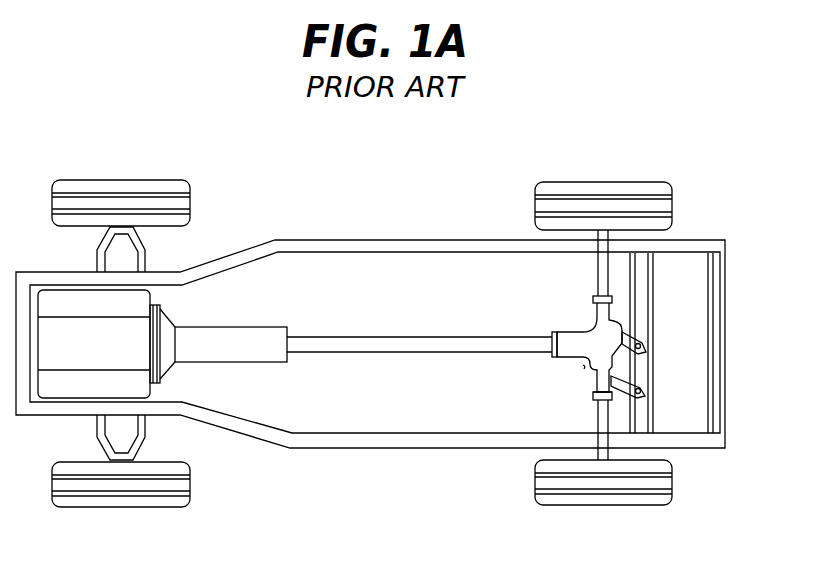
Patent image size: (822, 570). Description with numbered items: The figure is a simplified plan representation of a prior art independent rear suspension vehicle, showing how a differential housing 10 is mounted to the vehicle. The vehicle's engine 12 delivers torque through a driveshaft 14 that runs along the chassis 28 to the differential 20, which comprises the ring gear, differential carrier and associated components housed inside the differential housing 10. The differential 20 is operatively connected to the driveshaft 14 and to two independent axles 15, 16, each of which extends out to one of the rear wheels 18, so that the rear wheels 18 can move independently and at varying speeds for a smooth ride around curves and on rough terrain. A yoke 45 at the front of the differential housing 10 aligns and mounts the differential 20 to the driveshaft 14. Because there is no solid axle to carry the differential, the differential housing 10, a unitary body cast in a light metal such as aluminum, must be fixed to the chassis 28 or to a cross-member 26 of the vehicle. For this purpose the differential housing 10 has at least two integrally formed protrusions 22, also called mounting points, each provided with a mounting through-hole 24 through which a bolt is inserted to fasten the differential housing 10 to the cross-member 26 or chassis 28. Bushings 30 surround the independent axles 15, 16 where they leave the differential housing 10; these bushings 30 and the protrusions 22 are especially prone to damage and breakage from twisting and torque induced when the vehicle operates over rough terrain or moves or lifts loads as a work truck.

The differential housing 10 is at (584, 366).
The engine 12 is at (135, 348).
The driveshaft 14 is at (389, 355).
The independent axle 15 is at (612, 237).
The independent axle 16 is at (596, 452).
The rear wheel 18 is at (634, 182).
The differential 20 is at (615, 327).
The protrusion 22 is at (647, 352).
The mounting through-hole 24 is at (575, 333).
The cross-member 26 is at (650, 428).
The chassis 28 is at (291, 250).
The bushing 30 is at (607, 404).
The yoke 45 is at (582, 368).